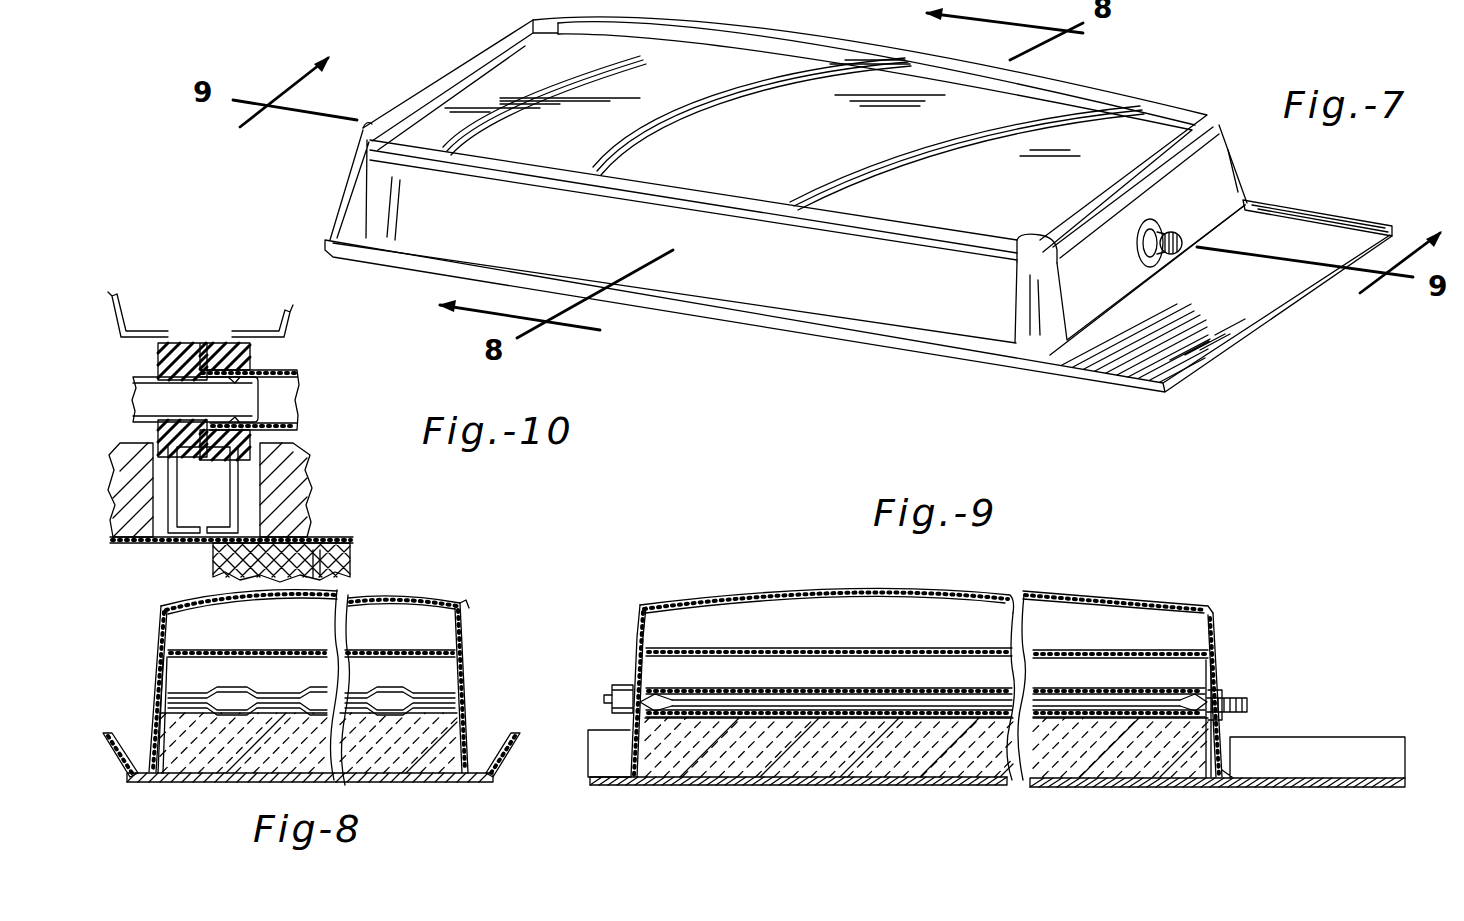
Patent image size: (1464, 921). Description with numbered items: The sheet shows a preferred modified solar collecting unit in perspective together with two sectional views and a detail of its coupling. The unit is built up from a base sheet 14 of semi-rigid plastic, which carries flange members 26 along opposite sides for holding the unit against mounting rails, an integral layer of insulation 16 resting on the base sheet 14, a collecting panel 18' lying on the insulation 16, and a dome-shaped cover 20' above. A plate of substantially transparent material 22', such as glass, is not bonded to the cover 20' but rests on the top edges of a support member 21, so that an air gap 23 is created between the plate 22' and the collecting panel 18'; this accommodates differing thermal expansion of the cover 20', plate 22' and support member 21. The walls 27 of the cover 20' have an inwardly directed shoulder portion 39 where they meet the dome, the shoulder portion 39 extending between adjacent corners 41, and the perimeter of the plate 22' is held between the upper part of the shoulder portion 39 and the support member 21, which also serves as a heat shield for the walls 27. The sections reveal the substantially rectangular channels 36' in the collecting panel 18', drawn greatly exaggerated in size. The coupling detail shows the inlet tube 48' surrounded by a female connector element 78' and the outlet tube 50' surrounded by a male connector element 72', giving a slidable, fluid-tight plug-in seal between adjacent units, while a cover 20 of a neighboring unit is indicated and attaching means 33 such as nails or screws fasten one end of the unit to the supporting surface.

In FIG. 7, the base sheet 14 is at (1208, 342).
In FIG. 10, the base sheet 14 is at (327, 533).
In FIG. 8, the base sheet 14 is at (243, 780).
In FIG. 9, the base sheet 14 is at (1073, 787).
In FIG. 10, the insulation 16 is at (117, 483).
In FIG. 8, the insulation 16 is at (233, 753).
In FIG. 9, the insulation 16 is at (880, 757).
In FIG. 8, the collecting panel 18' is at (350, 678).
In FIG. 9, the collecting panel 18' is at (923, 691).
In FIG. 10, the cover 20 is at (138, 300).
In FIG. 7, the cover 20' is at (788, 180).
In FIG. 10, the cover 20' is at (262, 300).
In FIG. 8, the cover 20' is at (310, 673).
In FIG. 9, the cover 20' is at (926, 669).
In FIG. 8, the support member 21 is at (163, 673).
In FIG. 9, the support member 21 is at (1208, 678).
In FIG. 8, the plate of substantially transparent material 22' is at (311, 633).
In FIG. 9, the plate of substantially transparent material 22' is at (927, 633).
In FIG. 8, the air gap 23 is at (290, 689).
In FIG. 9, the air gap 23 is at (987, 689).
In FIG. 7, the flange members 26 is at (1360, 222).
In FIG. 8, the flange members 26 is at (110, 760).
In FIG. 9, the flange members 26 is at (1352, 769).
In FIG. 8, the walls of the cover 27 is at (150, 697).
In FIG. 9, the walls of the cover 27 is at (620, 760).
In FIG. 10, the attaching means 33 is at (360, 550).
In FIG. 8, the channels 36' is at (200, 760).
In FIG. 7, the shoulder portion 39 is at (752, 214).
In FIG. 8, the shoulder portion 39 is at (160, 643).
In FIG. 9, the shoulder portion 39 is at (637, 637).
In FIG. 7, the corners 41 is at (356, 130).
In FIG. 10, the inlet tube 48' is at (275, 400).
In FIG. 9, the inlet tube 48' is at (595, 692).
In FIG. 7, the outlet tube 50' is at (1175, 229).
In FIG. 10, the outlet tube 50' is at (164, 399).
In FIG. 9, the outlet tube 50' is at (1260, 697).
In FIG. 7, the male connector element 72' is at (1137, 256).
In FIG. 10, the male connector element 72' is at (159, 436).
In FIG. 9, the male connector element 72' is at (1254, 713).
In FIG. 10, the female connector element 78' is at (204, 375).
In FIG. 9, the female connector element 78' is at (581, 712).